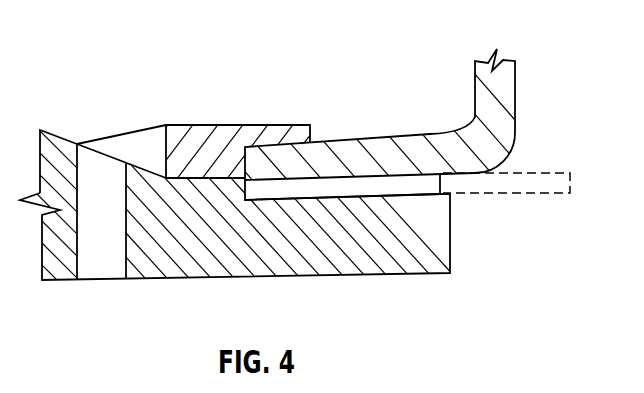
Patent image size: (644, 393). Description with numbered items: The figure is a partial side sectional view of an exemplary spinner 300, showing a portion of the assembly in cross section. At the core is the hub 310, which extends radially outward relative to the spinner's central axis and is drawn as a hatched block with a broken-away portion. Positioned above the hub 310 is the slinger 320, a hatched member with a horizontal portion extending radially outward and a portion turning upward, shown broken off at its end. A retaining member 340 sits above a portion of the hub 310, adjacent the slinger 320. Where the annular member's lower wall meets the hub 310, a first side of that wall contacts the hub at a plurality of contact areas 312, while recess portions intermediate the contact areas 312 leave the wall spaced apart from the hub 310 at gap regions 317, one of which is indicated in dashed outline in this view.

The spinner 300 is at (396, 45).
The hub 310 is at (264, 277).
The contact areas 312 is at (444, 186).
The gap regions 317 is at (530, 183).
The slinger 320 is at (501, 121).
The retaining member 340 is at (236, 126).